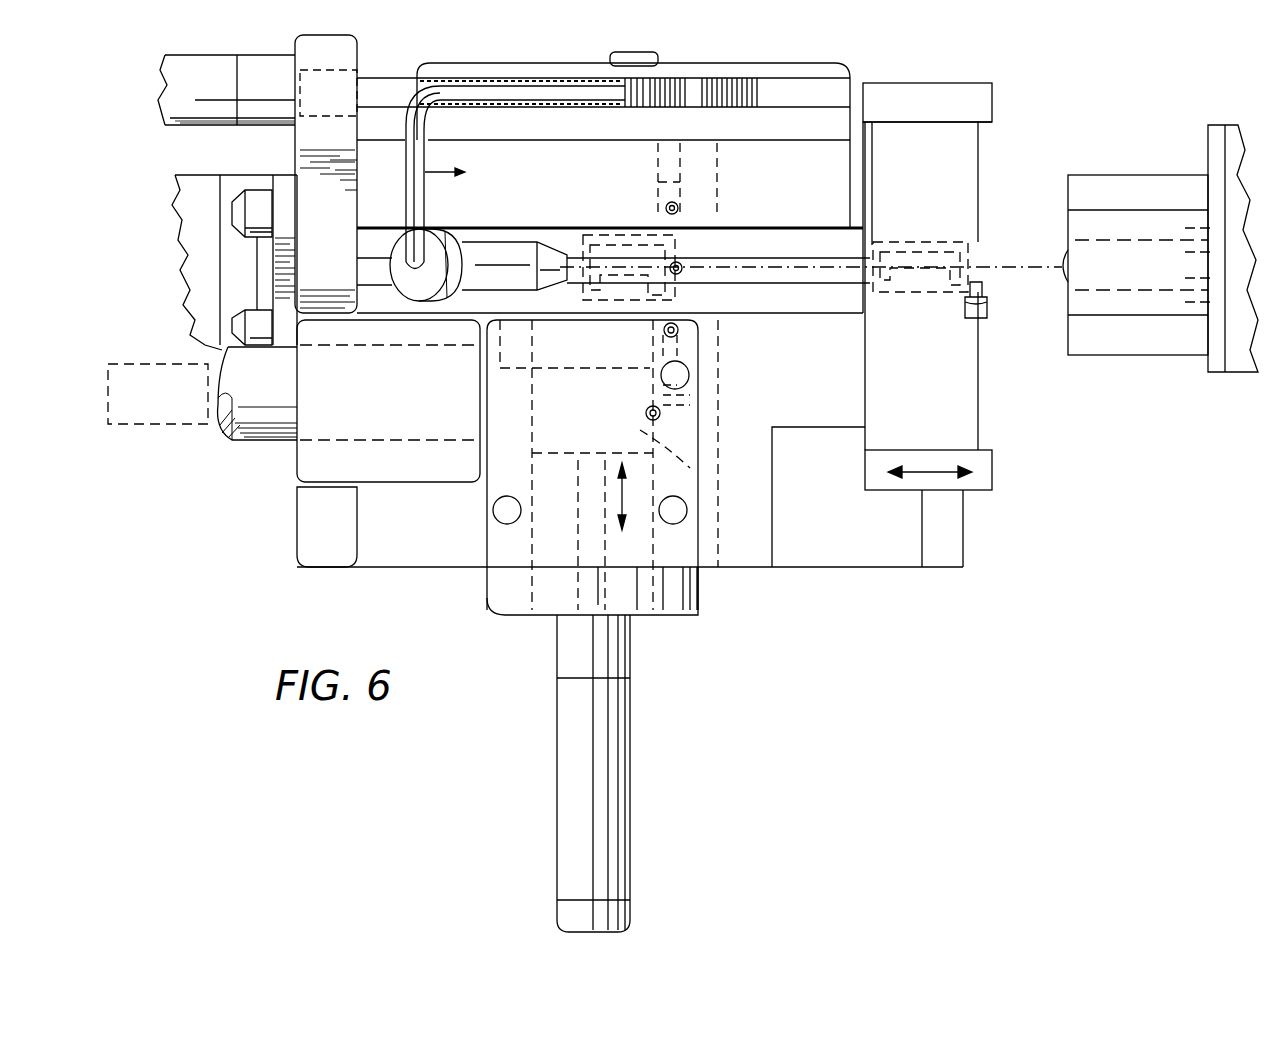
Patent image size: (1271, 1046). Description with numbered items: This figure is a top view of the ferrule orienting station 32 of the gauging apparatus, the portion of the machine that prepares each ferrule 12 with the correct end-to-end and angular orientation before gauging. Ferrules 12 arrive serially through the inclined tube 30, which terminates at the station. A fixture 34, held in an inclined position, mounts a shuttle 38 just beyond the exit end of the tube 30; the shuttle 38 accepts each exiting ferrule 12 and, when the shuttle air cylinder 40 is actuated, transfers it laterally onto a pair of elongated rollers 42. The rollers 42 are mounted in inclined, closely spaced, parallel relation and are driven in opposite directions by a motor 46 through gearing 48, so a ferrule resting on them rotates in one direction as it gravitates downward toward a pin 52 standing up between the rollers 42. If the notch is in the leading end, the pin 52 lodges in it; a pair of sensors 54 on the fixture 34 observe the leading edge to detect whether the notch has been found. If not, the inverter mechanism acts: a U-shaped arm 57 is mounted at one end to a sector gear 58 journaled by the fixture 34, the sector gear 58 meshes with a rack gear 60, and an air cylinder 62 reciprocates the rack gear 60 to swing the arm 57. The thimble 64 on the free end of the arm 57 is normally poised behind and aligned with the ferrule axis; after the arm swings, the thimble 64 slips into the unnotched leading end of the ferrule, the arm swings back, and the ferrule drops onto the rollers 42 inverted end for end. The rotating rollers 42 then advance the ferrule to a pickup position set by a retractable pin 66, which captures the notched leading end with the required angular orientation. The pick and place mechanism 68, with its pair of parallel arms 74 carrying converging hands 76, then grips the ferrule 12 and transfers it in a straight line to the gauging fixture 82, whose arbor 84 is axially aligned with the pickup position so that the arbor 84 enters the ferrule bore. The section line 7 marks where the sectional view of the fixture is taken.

The section line 7- 7 is at (635, 115).
The ferrule 12 is at (592, 240).
The inclined tube 30 is at (253, 417).
The ferrule orienting station 32 is at (862, 72).
The fixture 34 is at (860, 545).
The shuttle 38 is at (692, 470).
The shuttle air cylinder 40 is at (576, 728).
The elongated rollers 42 is at (792, 295).
The motor 46 is at (205, 216).
The gearing 48 is at (270, 262).
The pin 52 is at (682, 265).
The sensors 54 is at (680, 206).
The U-shaped arm 57 is at (436, 118).
The sector gear 58 is at (672, 92).
The rack gear 60 is at (532, 78).
The air cylinder 62 is at (205, 72).
The thimble 64 is at (445, 268).
The retractable pin 66 is at (990, 310).
The pick and place mechanism 68 is at (1015, 116).
The parallel arms 74 is at (946, 92).
The converging hands 76 is at (958, 168).
The gauging fixture 82 is at (1136, 357).
The arbor 84 is at (1062, 262).